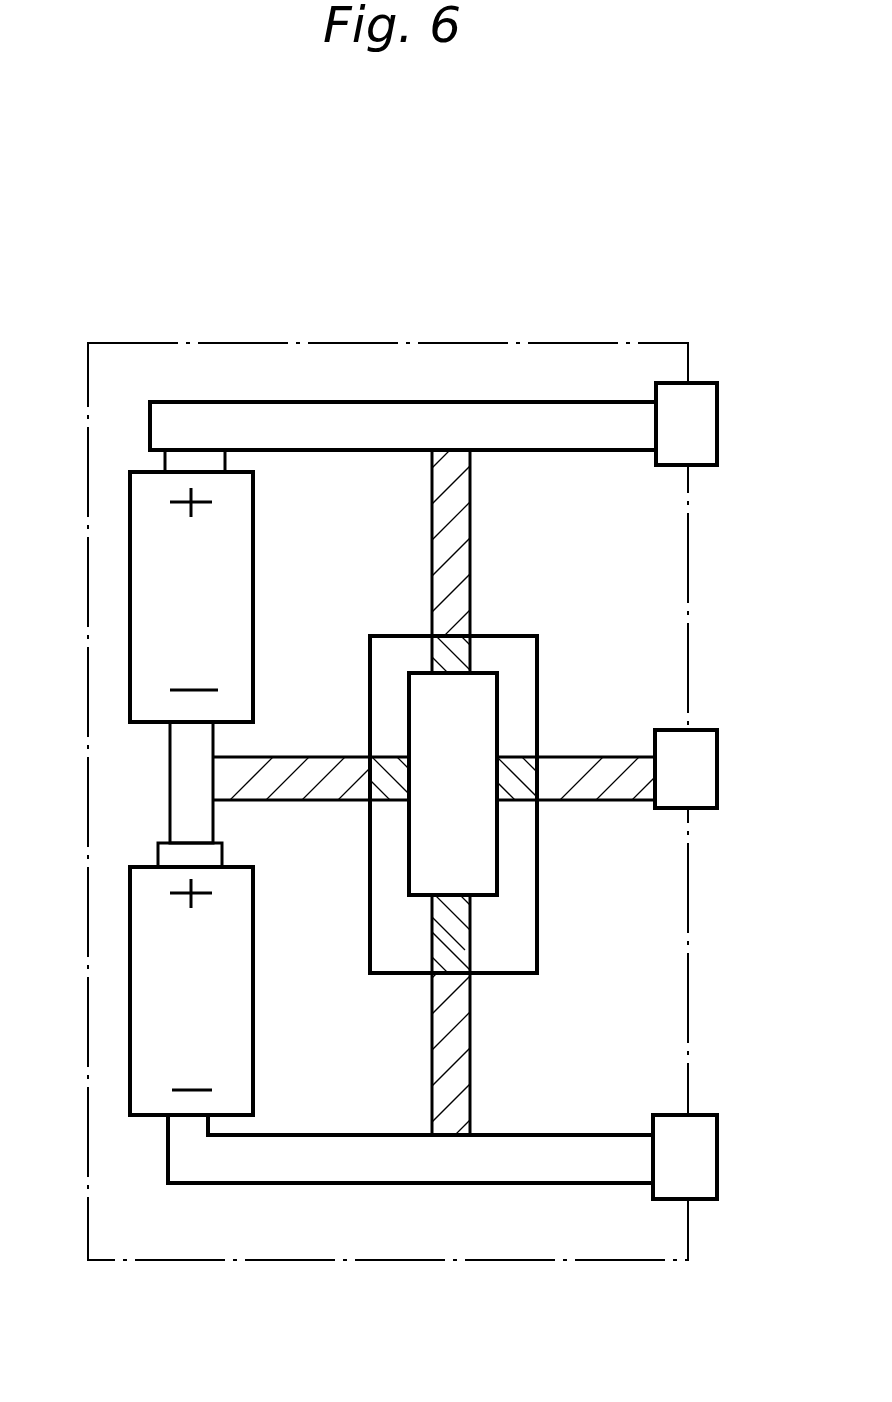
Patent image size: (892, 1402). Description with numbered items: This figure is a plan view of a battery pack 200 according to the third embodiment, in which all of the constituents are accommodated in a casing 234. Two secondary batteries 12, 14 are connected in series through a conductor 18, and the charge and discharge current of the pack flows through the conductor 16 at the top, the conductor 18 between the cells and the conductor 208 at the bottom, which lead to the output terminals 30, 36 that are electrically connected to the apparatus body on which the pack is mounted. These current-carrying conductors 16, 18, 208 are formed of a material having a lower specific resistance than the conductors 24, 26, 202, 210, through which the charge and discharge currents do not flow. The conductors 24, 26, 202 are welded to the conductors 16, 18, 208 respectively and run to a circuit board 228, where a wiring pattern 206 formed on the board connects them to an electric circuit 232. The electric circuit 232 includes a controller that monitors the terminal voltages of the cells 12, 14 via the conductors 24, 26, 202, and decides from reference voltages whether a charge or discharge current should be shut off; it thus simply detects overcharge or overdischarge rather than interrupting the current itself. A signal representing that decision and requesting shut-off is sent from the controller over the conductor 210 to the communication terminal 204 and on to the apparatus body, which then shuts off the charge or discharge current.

The battery pack 200 is at (386, 146).
The casing 234 is at (433, 343).
The conductor 16 is at (413, 402).
The output terminal 30 is at (718, 400).
The secondary battery 12 is at (253, 512).
The conductor 18 is at (170, 805).
The secondary battery 14 is at (253, 957).
The conductor 208 is at (393, 1183).
The output terminal 36 is at (693, 1115).
The communication terminal 204 is at (696, 730).
The conductor 24 is at (470, 578).
The conductor 26 is at (278, 757).
The conductor 210 is at (570, 757).
The conductor 202 is at (470, 1047).
The wiring pattern 206 is at (432, 655).
The circuit board 228 is at (537, 930).
The electric circuit 232 is at (497, 690).